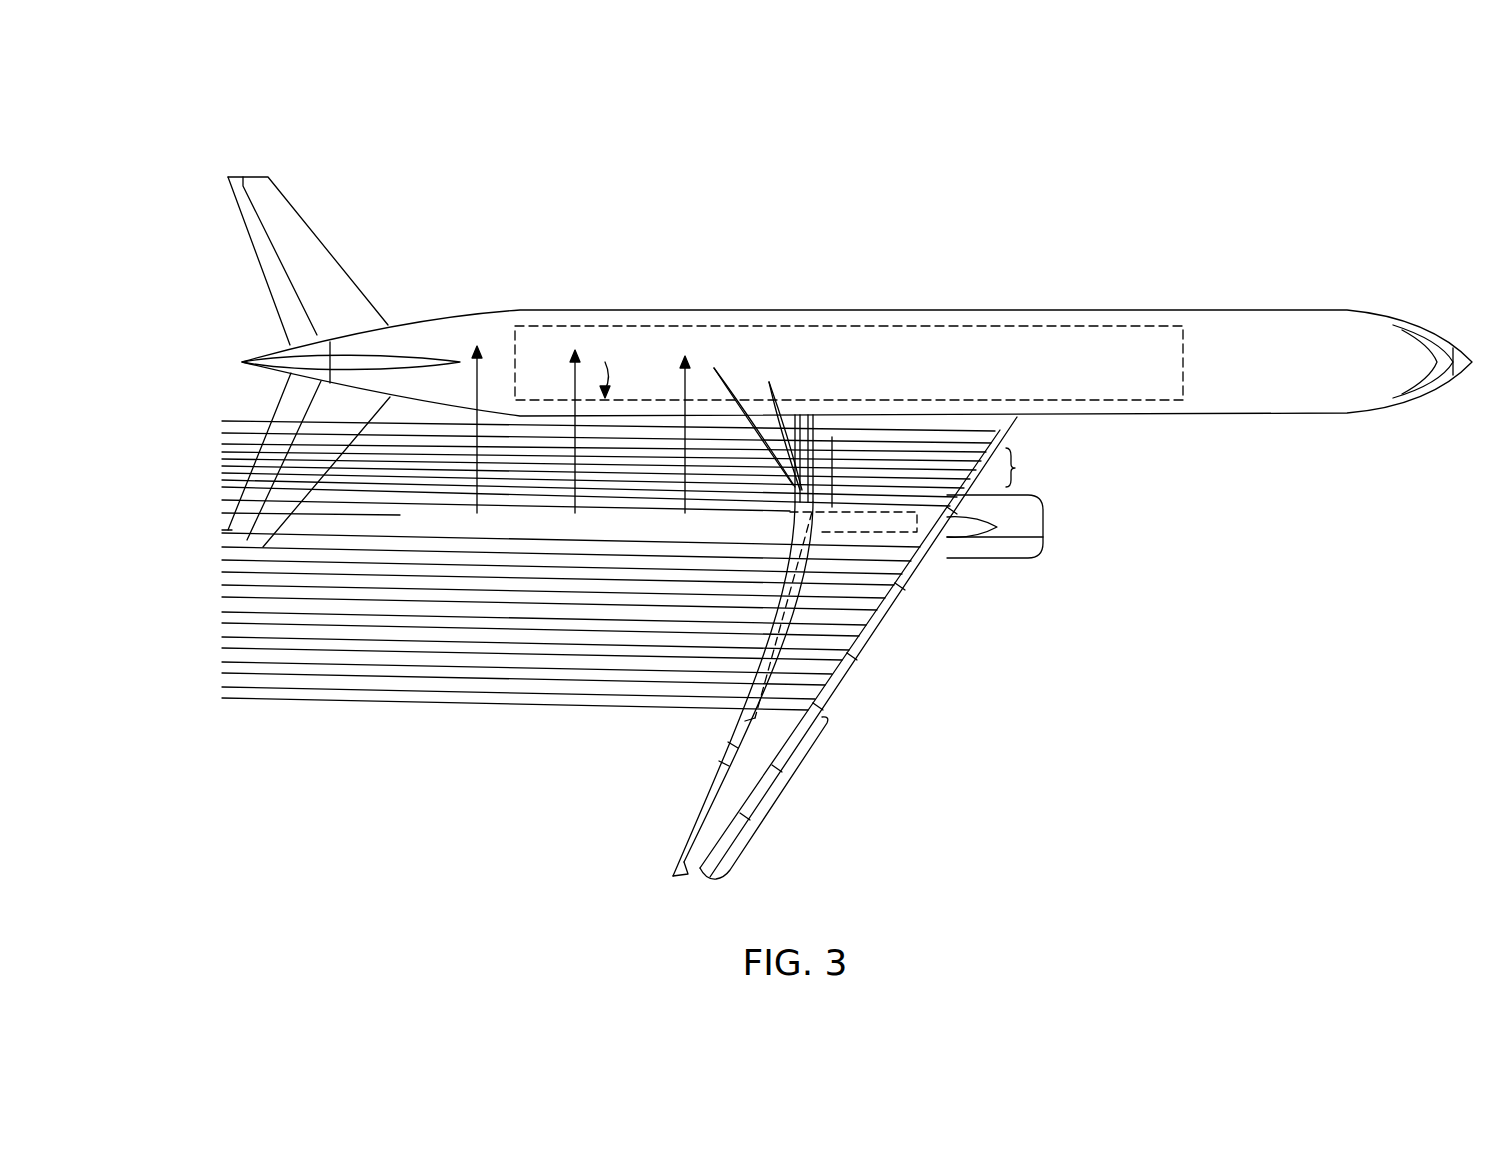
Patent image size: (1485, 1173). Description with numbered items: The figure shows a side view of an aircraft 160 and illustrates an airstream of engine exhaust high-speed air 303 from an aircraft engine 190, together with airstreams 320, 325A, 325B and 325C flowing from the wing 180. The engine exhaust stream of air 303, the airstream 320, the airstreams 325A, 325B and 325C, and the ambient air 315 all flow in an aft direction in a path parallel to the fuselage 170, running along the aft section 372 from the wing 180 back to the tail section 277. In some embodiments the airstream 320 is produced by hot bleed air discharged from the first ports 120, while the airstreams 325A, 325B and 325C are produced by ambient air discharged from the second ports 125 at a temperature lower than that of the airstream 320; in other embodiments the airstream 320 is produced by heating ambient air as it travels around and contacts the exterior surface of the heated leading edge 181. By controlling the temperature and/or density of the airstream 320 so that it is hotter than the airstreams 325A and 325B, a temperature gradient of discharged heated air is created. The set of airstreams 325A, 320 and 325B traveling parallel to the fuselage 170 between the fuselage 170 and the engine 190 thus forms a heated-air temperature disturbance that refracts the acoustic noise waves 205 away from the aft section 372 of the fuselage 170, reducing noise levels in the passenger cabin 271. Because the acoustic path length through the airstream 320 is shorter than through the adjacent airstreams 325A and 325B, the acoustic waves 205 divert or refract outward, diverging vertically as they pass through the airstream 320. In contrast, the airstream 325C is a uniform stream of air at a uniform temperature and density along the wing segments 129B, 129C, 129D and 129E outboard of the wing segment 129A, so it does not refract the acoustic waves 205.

The aircraft 160 is at (1226, 128).
The fuselage 170 is at (1258, 310).
The passenger cabin 271 is at (1187, 366).
The tail section 277 is at (278, 316).
The engine exhaust stream of air 303 is at (223, 528).
The airstream 325A is at (223, 432).
The airstream 320 is at (213, 449).
The airstream 325B is at (223, 502).
The airstream 325C is at (212, 547).
The acoustic noise waves 205 is at (555, 429).
The aft section 372 is at (609, 366).
The first ports 120 is at (746, 419).
The second ports 125 is at (791, 430).
The ambient air 315 is at (1022, 645).
The wing 180 is at (745, 743).
The wing segment 129A is at (996, 428).
The wing segment 129B is at (905, 586).
The wing segment 129C is at (865, 650).
The wing segment 129D is at (828, 698).
The wing segment 129E is at (780, 800).
The heated leading edge 181 is at (1037, 467).
The aircraft engine 190 is at (1043, 528).